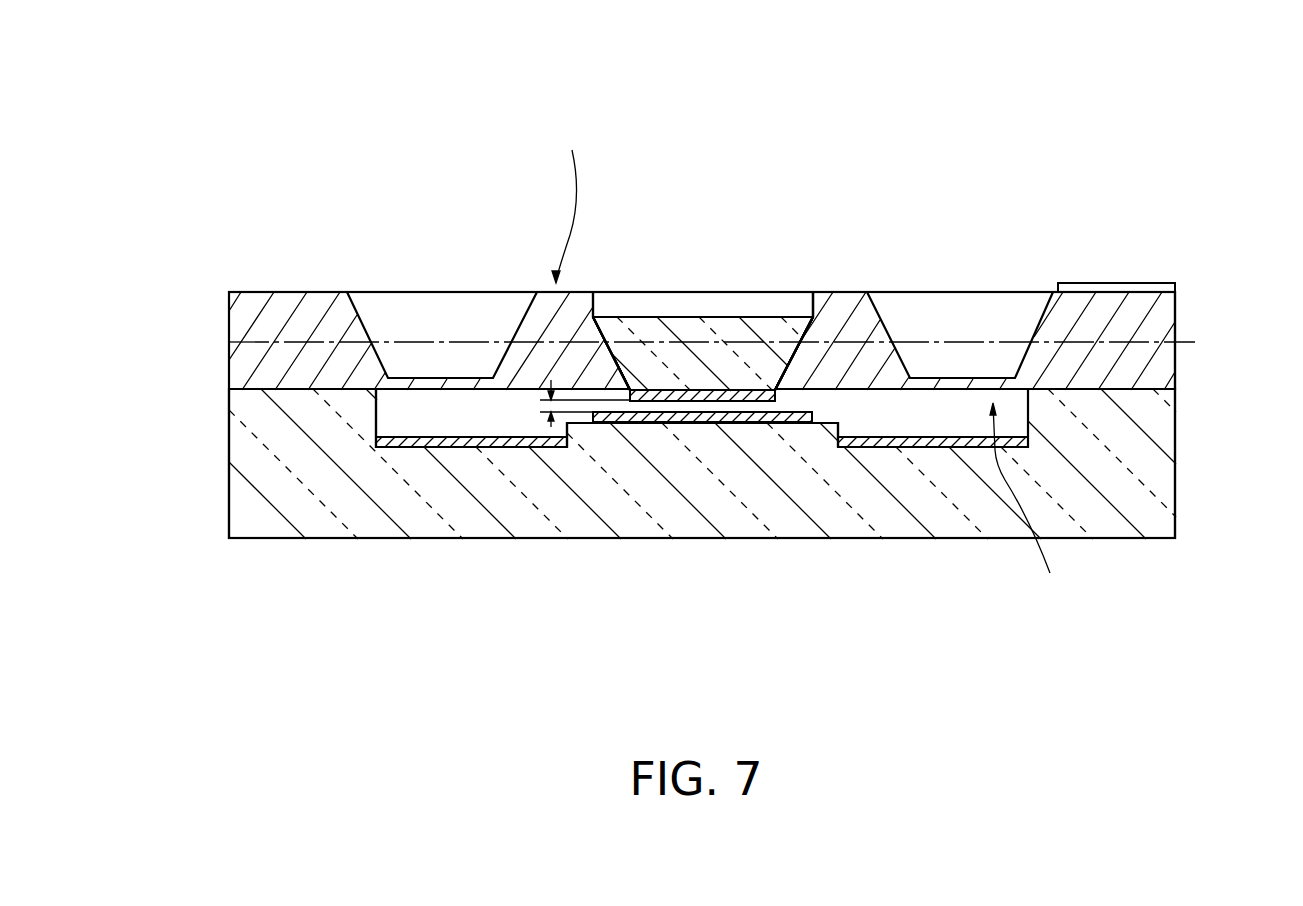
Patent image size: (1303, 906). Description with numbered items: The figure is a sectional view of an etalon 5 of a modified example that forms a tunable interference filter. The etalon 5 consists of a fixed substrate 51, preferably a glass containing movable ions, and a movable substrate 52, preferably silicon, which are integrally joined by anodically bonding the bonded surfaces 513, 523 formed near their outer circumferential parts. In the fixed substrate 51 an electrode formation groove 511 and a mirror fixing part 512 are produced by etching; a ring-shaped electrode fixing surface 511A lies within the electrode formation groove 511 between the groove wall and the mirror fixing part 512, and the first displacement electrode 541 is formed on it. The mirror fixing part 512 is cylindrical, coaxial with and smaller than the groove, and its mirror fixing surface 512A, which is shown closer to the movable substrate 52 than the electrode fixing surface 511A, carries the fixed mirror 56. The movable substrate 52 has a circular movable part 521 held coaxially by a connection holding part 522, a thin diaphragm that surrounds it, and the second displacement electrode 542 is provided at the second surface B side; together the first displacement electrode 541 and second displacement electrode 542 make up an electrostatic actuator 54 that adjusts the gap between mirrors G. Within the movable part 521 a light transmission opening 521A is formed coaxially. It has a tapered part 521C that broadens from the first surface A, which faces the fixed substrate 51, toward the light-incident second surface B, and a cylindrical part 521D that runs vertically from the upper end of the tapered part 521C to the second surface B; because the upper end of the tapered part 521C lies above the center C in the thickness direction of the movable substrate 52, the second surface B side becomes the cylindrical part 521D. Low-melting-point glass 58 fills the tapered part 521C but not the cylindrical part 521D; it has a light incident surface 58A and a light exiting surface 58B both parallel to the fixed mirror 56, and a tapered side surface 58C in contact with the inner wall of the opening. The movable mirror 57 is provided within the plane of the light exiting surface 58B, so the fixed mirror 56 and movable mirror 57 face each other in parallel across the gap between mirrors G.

The etalon 5 is at (1148, 134).
The fixed substrate 51 is at (1177, 482).
The electrode formation groove 511 is at (380, 418).
The electrode fixing surface 511A is at (867, 438).
The mirror fixing part 512 is at (550, 448).
The mirror fixing surface 512A is at (684, 416).
The bonded surface 513 is at (252, 388).
The movable substrate 52 is at (1177, 300).
The movable part 521 is at (882, 325).
The light transmission opening 521A is at (774, 352).
The tapered part 521C is at (794, 353).
The cylindrical part 521D is at (813, 303).
The connection holding part 522 is at (433, 376).
The bonded surface 523 is at (238, 401).
The electrostatic actuator 54 is at (782, 408).
The first displacement electrode 541 is at (447, 441).
The second displacement electrode 542 is at (1115, 285).
The fixed mirror 56 is at (745, 420).
The movable mirror 57 is at (657, 365).
The low-melting-point glass 58 is at (681, 316).
The light incident surface 58A is at (606, 345).
The light exiting surface 58B is at (754, 402).
The tapered side surface 58C is at (797, 360).
The first surface A is at (1024, 505).
The second surface B is at (567, 200).
The center in the thickness direction C is at (728, 348).
The gap between mirrors G is at (547, 402).